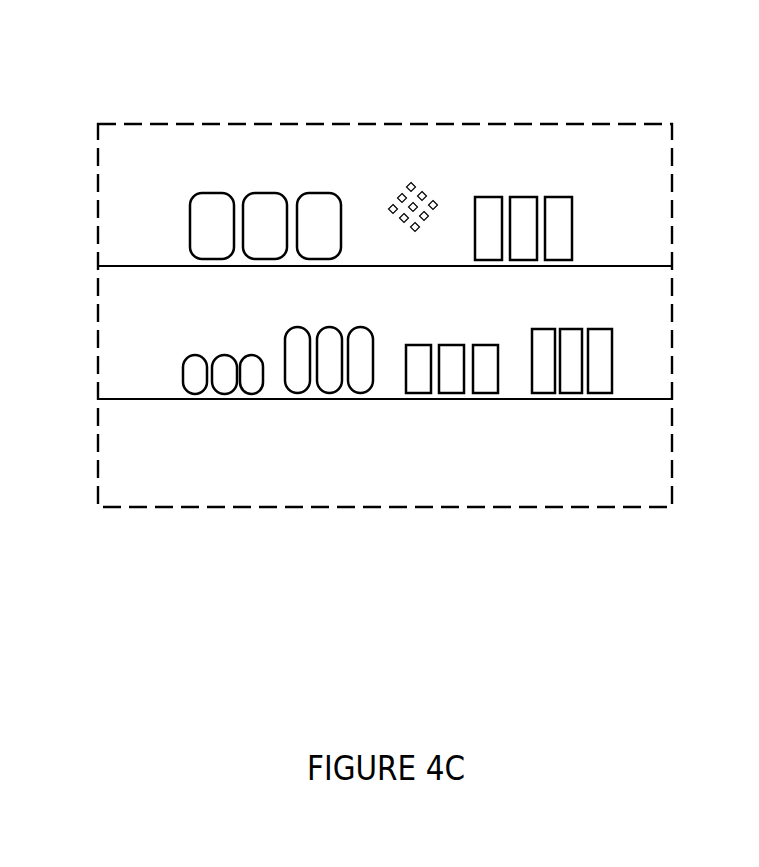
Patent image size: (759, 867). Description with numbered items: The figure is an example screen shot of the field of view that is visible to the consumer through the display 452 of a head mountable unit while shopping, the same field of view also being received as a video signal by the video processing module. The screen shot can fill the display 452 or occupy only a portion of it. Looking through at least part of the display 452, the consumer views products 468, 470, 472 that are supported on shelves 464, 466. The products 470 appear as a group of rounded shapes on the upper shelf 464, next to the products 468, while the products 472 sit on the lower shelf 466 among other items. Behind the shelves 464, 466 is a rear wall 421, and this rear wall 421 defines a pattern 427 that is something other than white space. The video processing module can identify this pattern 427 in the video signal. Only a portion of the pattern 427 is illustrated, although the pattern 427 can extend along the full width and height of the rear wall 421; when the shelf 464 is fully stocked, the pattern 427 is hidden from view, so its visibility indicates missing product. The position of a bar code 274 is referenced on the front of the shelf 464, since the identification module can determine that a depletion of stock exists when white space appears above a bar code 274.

The display 452 is at (250, 507).
The shelf 464 is at (622, 267).
The shelf 466 is at (120, 400).
The bar code 274 is at (427, 267).
The products 470 is at (318, 227).
The rear wall 421 is at (372, 192).
The pattern 427 is at (423, 192).
The products 468 is at (558, 228).
The products 472 is at (450, 393).